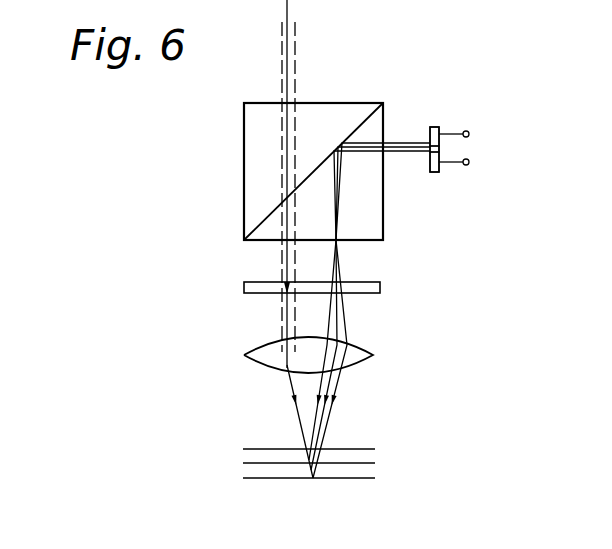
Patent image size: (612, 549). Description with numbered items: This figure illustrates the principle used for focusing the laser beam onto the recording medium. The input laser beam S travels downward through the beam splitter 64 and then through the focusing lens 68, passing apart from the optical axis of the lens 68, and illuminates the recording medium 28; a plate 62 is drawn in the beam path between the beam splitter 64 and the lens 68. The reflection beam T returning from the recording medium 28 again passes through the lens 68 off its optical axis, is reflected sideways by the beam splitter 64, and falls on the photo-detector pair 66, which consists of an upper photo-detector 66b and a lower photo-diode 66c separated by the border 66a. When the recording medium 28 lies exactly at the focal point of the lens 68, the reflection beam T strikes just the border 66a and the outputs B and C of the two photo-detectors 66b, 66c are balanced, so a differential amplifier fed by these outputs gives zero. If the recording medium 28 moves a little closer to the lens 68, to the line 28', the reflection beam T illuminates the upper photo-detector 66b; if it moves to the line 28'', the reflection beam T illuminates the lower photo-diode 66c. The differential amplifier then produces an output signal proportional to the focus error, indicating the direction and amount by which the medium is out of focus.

The input laser beam S is at (292, 12).
The beam splitter 64 is at (355, 102).
The photo-detector pair 66 is at (476, 135).
The border 66a is at (440, 150).
The upper photo-detector 66b is at (437, 126).
The lower photo-diode 66c is at (436, 172).
The output of photo-detector 66b B is at (461, 135).
The output of photo-detector 66c C is at (461, 163).
The reflection beam T is at (339, 262).
The quarter-wave plate 62 is at (380, 287).
The focusing lens 68 is at (373, 353).
The line 28' is at (327, 428).
The recording medium 28 is at (332, 462).
The line 28'' is at (329, 495).